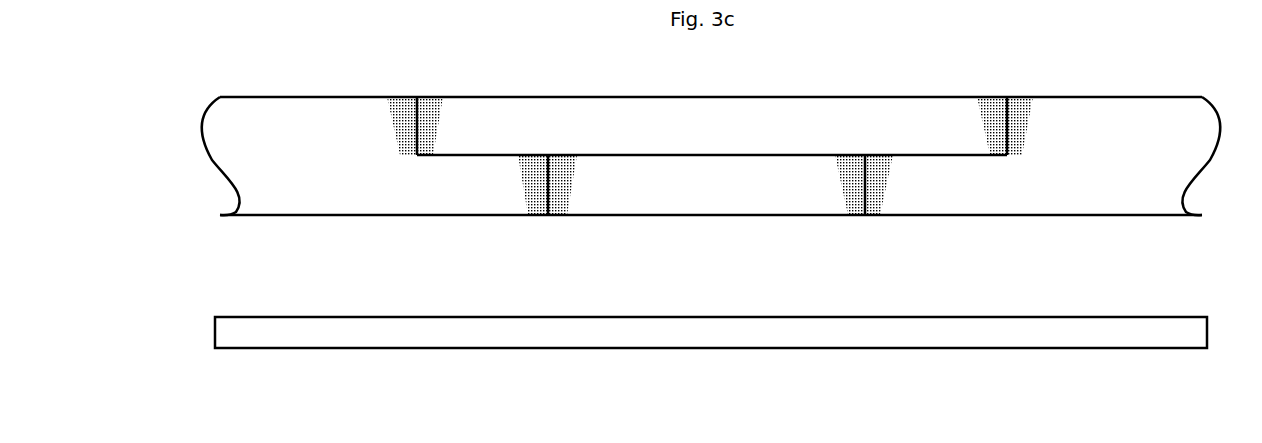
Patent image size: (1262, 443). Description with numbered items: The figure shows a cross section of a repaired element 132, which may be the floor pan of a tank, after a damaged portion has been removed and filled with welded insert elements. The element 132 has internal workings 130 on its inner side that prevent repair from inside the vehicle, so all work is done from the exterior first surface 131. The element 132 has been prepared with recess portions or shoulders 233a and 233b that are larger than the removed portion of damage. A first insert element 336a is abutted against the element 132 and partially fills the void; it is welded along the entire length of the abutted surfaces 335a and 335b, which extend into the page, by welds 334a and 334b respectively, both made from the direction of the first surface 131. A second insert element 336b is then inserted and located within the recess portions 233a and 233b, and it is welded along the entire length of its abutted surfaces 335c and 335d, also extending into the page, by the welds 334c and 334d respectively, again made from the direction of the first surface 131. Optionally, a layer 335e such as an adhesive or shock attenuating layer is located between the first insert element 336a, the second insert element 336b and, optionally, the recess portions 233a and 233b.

The internal workings 130 is at (952, 337).
The first surface 131 is at (263, 71).
The element 132 is at (318, 186).
The recess portion 233a is at (417, 155).
The recess portion 233b is at (1007, 155).
The weld 334a is at (535, 185).
The weld 334b is at (850, 185).
The weld 334c is at (432, 108).
The weld 334d is at (1017, 108).
The abutted surface 335a is at (550, 200).
The abutted surface 335b is at (865, 200).
The abutted surface 335c is at (415, 108).
The abutted surface 335d is at (1003, 110).
The layer 335e is at (663, 155).
The first insert element 336a is at (710, 205).
The second insert element 336b is at (735, 112).